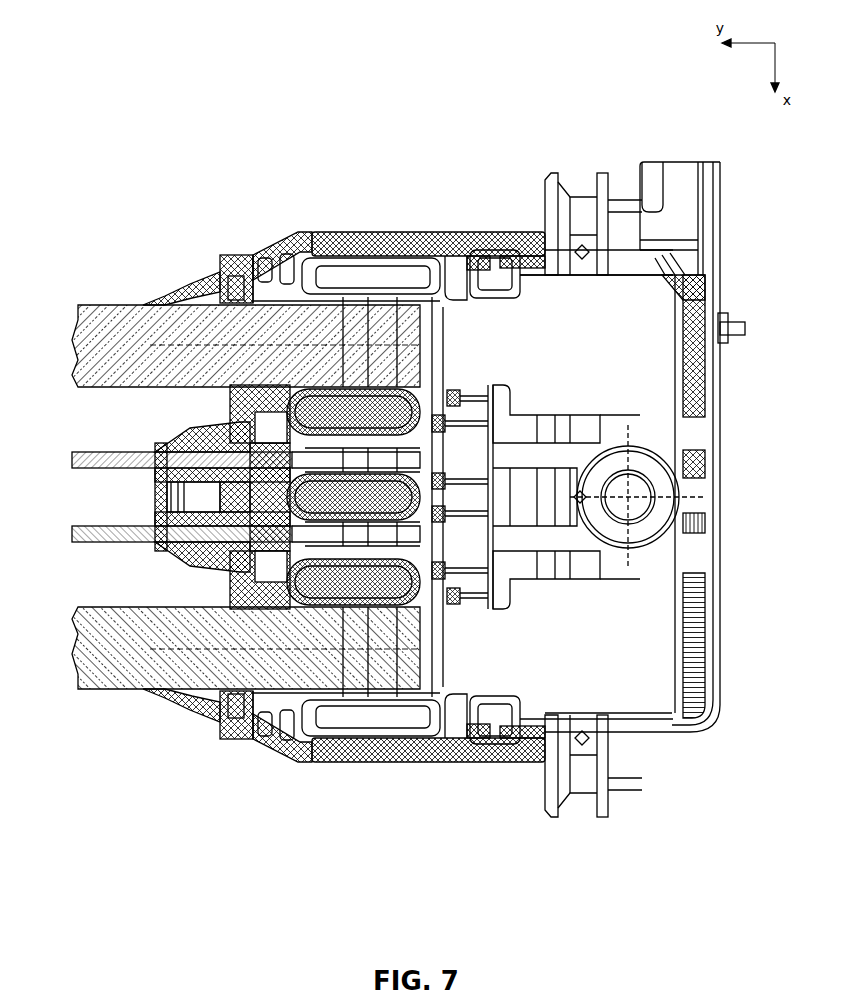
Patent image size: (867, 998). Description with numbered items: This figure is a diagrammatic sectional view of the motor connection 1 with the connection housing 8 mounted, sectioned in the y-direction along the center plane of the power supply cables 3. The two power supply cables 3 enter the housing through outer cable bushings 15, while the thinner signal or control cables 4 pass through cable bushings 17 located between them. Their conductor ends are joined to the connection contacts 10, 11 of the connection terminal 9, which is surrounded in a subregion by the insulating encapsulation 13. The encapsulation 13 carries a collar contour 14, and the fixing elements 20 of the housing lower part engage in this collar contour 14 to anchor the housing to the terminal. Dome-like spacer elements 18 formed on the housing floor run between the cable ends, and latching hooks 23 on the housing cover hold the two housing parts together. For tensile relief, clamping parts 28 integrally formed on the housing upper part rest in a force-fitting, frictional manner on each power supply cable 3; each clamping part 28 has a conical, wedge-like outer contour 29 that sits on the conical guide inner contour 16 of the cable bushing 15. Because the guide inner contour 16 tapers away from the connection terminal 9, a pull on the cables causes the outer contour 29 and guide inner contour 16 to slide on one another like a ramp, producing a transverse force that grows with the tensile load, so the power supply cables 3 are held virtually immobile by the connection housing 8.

The motor connection 1 is at (312, 110).
The power supply cables 3 is at (97, 313).
The signal or control cables 4 is at (90, 452).
The connection housing 8 is at (307, 237).
The connection terminal 9 is at (670, 552).
The connection contacts 10 is at (650, 352).
The connection contacts 11 is at (570, 453).
The insulating encapsulation 13 is at (640, 725).
The collar contour 14 is at (513, 293).
The cable bushings 15 is at (143, 303).
The guide inner contours 16 is at (213, 280).
The cable bushings 17 is at (160, 450).
The spacer elements 18 is at (467, 393).
The fixing elements 20 is at (472, 232).
The latching hooks 23 is at (370, 230).
The clamping parts 28 is at (270, 256).
The outer contour 29 is at (233, 287).